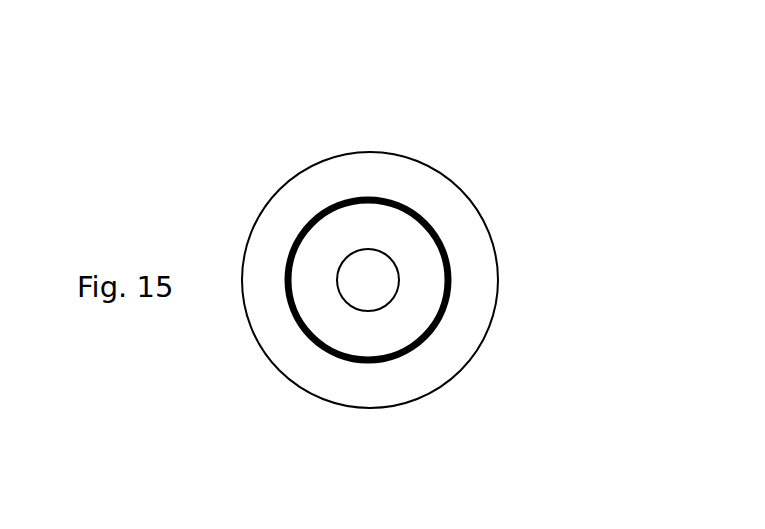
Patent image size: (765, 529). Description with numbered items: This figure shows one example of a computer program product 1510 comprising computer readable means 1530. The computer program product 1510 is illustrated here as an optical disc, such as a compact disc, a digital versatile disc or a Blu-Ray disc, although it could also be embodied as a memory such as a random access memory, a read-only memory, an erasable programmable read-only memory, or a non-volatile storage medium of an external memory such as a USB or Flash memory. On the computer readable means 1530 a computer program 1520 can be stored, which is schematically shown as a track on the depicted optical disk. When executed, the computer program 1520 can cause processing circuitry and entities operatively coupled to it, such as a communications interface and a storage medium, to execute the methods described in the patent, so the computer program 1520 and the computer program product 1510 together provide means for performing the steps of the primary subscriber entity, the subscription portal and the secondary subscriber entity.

The computer program product 1510 is at (508, 197).
The computer program 1520 is at (447, 300).
The computer readable means 1530 is at (413, 387).